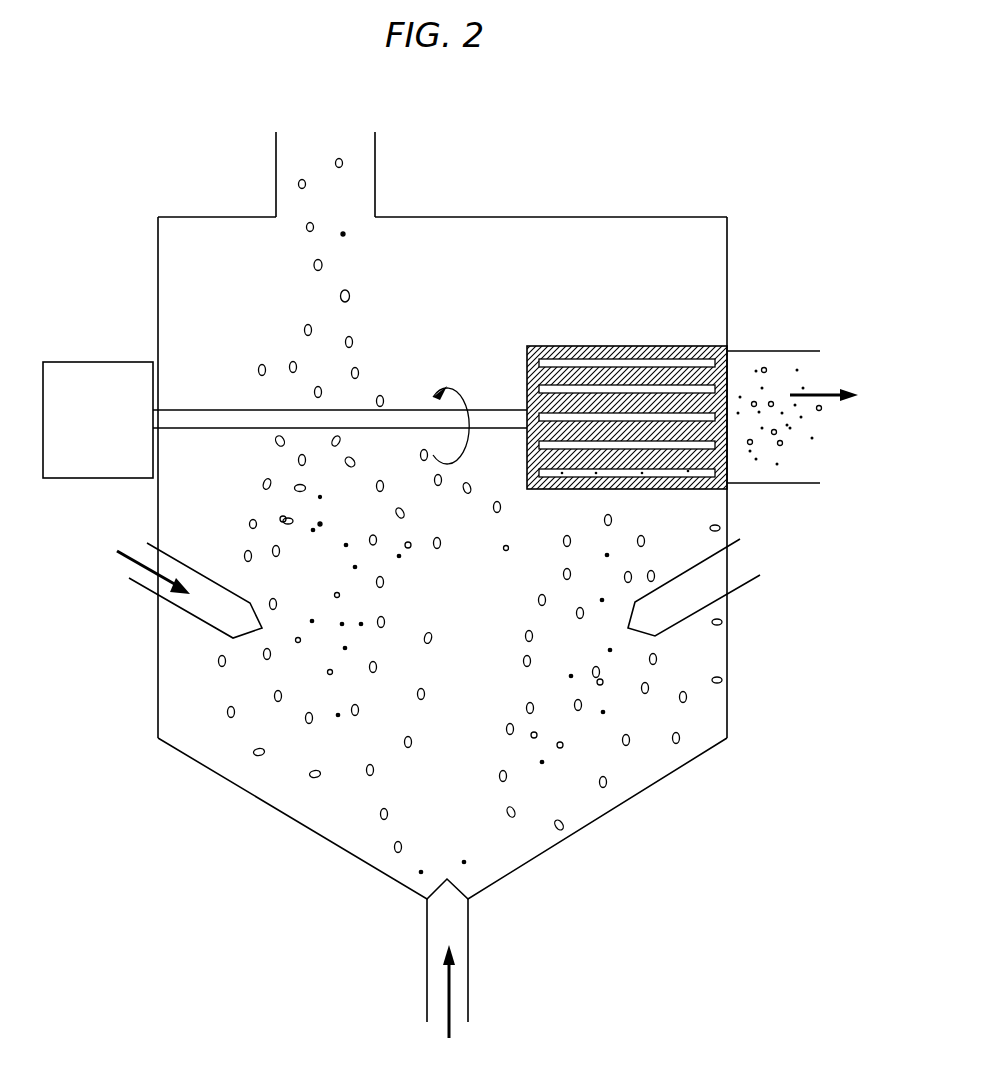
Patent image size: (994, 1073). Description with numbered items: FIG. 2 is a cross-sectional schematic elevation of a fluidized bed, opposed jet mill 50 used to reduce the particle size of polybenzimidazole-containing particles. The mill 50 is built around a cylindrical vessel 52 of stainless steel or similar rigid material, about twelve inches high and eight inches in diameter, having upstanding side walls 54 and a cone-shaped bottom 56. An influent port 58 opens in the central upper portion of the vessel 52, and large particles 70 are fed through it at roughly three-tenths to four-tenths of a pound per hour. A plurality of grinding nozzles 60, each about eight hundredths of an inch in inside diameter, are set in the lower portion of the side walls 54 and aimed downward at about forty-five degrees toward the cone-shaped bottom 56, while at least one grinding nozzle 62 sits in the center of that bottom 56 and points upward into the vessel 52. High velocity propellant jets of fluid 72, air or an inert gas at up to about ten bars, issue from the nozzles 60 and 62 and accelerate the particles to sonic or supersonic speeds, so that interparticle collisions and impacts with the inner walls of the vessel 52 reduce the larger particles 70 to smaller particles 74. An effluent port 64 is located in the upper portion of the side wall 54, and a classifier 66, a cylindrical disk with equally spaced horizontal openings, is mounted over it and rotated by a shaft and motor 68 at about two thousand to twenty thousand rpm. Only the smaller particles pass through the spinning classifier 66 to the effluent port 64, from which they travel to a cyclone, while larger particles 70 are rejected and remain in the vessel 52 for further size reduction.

The fluidized bed, jet mill 50 is at (522, 181).
The cylindrical vessel 52 is at (181, 273).
The upstanding side walls 54 is at (159, 695).
The cone-shaped bottom 56 is at (290, 822).
The influent port 58 is at (276, 157).
The grinding nozzles 60 is at (158, 597).
The grinding nozzle 62 is at (427, 979).
The effluent port 64 is at (798, 351).
The classifier 66 is at (628, 346).
The shaft and motor 68 is at (211, 410).
The large particles 70 is at (347, 296).
The propellant jets of fluid 72 is at (450, 992).
The smaller particles 74 is at (798, 418).